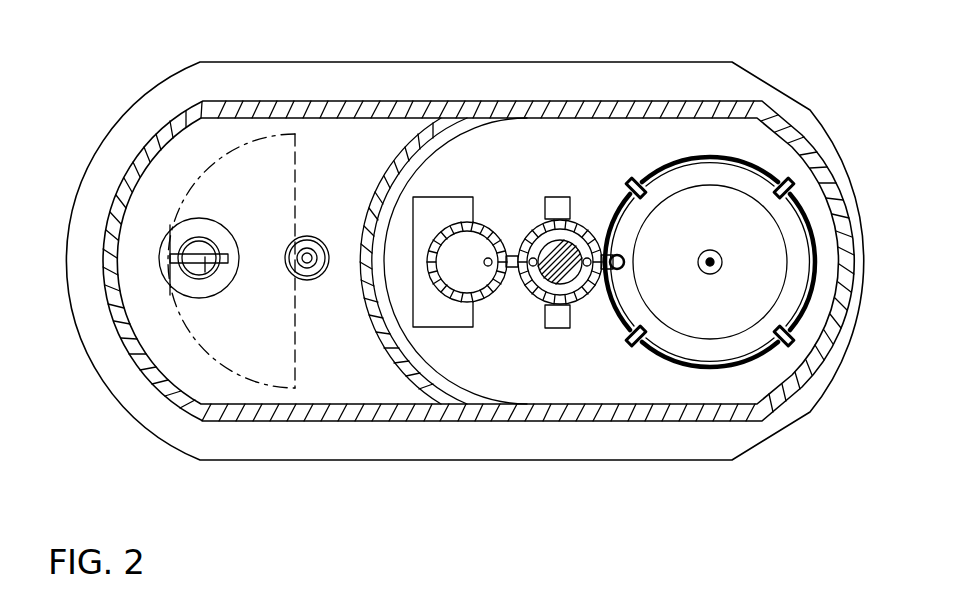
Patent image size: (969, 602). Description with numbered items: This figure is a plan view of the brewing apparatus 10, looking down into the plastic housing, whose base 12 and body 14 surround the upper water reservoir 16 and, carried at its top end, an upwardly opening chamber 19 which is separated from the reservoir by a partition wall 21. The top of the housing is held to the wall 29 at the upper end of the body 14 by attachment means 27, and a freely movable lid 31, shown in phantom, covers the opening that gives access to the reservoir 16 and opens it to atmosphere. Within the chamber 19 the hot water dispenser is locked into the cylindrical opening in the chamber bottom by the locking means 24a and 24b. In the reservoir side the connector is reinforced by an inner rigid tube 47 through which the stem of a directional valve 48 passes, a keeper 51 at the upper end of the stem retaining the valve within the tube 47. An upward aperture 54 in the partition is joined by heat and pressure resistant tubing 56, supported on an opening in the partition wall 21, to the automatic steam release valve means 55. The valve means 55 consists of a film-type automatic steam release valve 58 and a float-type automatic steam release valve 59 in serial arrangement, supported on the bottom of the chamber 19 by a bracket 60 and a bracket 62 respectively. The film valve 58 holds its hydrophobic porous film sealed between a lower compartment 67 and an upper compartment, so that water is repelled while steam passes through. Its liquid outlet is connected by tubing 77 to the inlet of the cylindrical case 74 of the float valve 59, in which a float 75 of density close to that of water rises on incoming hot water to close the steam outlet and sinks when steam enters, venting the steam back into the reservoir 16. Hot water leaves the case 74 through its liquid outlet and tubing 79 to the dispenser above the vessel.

The device 10 is at (691, 58).
The base 12 is at (452, 82).
The body 14 is at (278, 100).
The upper water reservoir 16 is at (344, 365).
The upwardly opening chamber 19 is at (542, 389).
The partition wall 21 is at (385, 176).
The locking means 24a is at (642, 176).
The locking means 24b is at (641, 189).
The attachment means 27 is at (405, 108).
The wall 29 is at (343, 121).
The freely movable lid 31 is at (224, 150).
The inner rigid tube 47 is at (218, 223).
The directional valve 48 is at (222, 248).
The keeper 51 is at (206, 273).
The upward aperture 54 is at (318, 282).
The automatic steam release valve means 55 is at (508, 216).
The heat and pressure resistant tubing 56 is at (311, 240).
The film-type automatic steam release valve 58 is at (483, 222).
The float-type automatic steam release valve 59 is at (538, 221).
The bracket 60 is at (443, 328).
The bracket 62 is at (546, 312).
The lower compartment 67 is at (488, 292).
The cylindrical case 74 is at (583, 300).
The float 75 is at (560, 285).
The heat and pressure resistant tubing 77 is at (512, 269).
The heat and pressure resistant tubing 79 is at (608, 240).